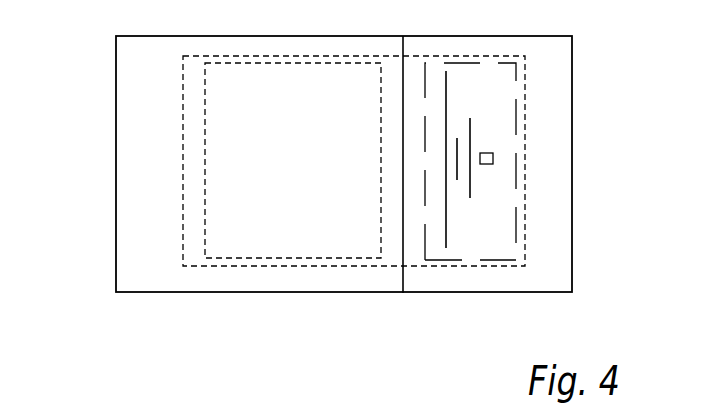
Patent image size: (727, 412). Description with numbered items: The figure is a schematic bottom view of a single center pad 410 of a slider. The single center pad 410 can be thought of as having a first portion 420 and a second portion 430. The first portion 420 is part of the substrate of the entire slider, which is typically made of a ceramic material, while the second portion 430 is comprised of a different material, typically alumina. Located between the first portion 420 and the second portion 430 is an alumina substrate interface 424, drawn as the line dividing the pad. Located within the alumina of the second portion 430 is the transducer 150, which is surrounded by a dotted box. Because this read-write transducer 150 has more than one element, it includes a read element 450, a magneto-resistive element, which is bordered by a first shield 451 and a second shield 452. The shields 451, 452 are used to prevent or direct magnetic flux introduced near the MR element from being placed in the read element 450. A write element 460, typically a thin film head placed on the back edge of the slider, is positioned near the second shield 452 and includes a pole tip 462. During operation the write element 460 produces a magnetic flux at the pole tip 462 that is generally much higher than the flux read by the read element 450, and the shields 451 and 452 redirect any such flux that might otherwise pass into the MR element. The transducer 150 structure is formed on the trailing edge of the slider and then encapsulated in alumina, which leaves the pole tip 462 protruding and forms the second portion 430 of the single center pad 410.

The transducer 150 is at (516, 75).
The single center pad 410 is at (183, 219).
The first portion 420 is at (293, 258).
The alumina substrate interface 424 is at (403, 293).
The second portion 430 is at (450, 260).
The read element 450 is at (457, 146).
The first shield 451 is at (446, 118).
The second shield 452 is at (472, 140).
The write element 460 is at (493, 158).
The pole tip 462 is at (489, 165).